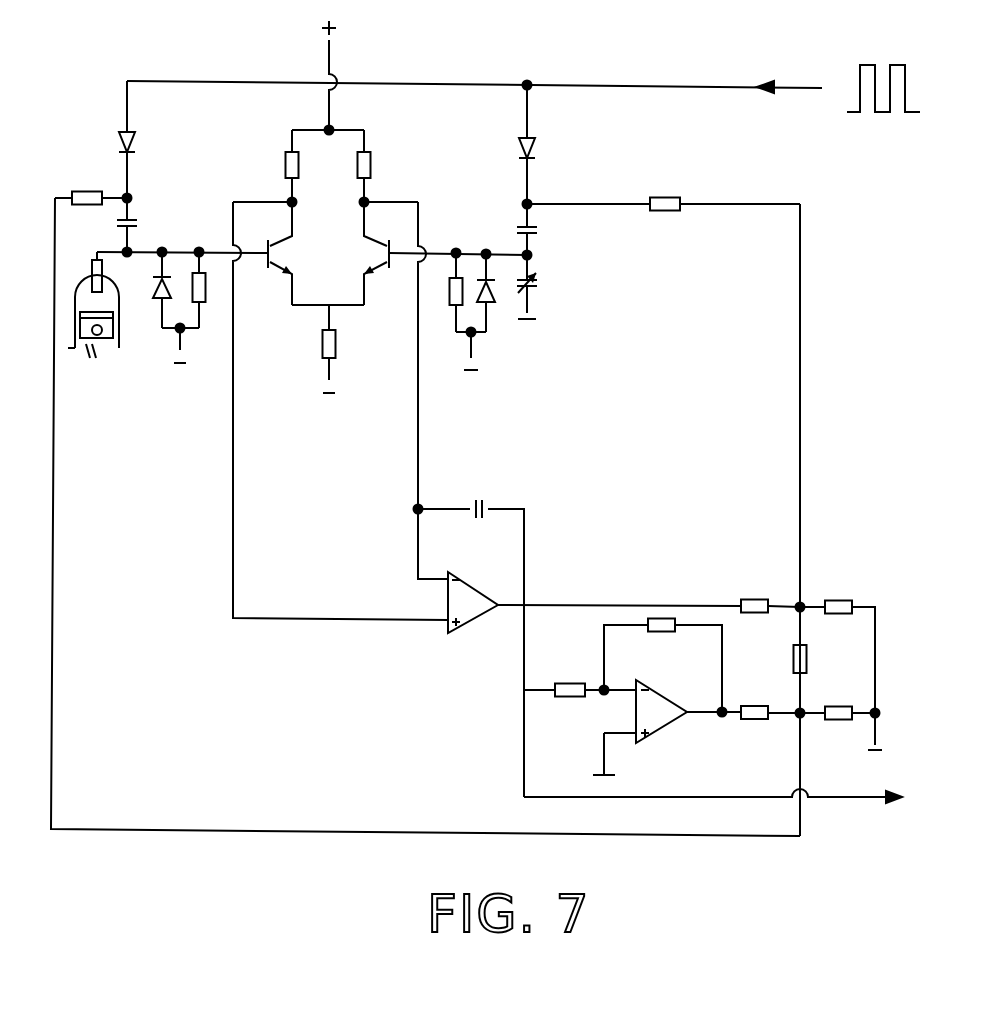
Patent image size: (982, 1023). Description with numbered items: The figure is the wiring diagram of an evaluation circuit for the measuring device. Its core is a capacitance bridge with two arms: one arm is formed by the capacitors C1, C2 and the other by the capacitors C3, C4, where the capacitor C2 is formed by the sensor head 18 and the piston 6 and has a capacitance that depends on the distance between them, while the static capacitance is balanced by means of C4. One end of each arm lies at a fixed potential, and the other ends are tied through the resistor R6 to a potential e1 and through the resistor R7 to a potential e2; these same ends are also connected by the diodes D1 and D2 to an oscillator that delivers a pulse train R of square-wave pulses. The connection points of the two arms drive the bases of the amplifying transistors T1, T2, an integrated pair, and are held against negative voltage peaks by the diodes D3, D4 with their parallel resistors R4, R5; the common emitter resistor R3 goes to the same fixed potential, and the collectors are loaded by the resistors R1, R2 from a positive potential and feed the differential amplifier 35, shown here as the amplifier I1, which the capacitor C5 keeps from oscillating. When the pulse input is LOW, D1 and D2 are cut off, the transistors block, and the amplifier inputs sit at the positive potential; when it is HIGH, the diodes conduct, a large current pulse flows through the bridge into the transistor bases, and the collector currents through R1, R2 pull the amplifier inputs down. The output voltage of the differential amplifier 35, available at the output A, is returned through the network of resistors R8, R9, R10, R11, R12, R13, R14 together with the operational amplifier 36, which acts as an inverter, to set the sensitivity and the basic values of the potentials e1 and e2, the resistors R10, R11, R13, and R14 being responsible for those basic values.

The pulse train R is at (648, 87).
The diode D1 is at (150, 138).
The potential e1 is at (125, 195).
The resistor R6 is at (91, 182).
The capacitor C1 is at (145, 225).
The sensor head 18 is at (92, 266).
The capacitor C2 is at (122, 345).
The piston 6 is at (107, 340).
The diode D4 is at (158, 312).
The resistor R4 is at (200, 312).
The resistor R1 is at (274, 166).
The resistor R2 is at (383, 166).
The amplifying transistor T1 is at (295, 253).
The amplifying transistor T2 is at (362, 253).
The common emitter resistor R3 is at (350, 349).
The diode D2 is at (548, 144).
The capacitor C3 is at (509, 229).
The capacitor C4 is at (548, 287).
The resistor R5 is at (455, 312).
The diode D3 is at (490, 305).
The potential e2 is at (575, 204).
The resistor R7 is at (663, 185).
The capacitor C5 is at (471, 633).
The differential amplifier 35 is at (472, 610).
The integrator amplifier I1 is at (487, 568).
The resistor R10 is at (649, 589).
The resistor R11 is at (837, 639).
The resistor R12 is at (828, 658).
The resistor R13 is at (761, 697).
The resistor R14 is at (841, 712).
The resistor R8 is at (580, 675).
The resistor R9 is at (663, 666).
The operational amplifier 36 is at (668, 722).
The output signal A is at (840, 797).